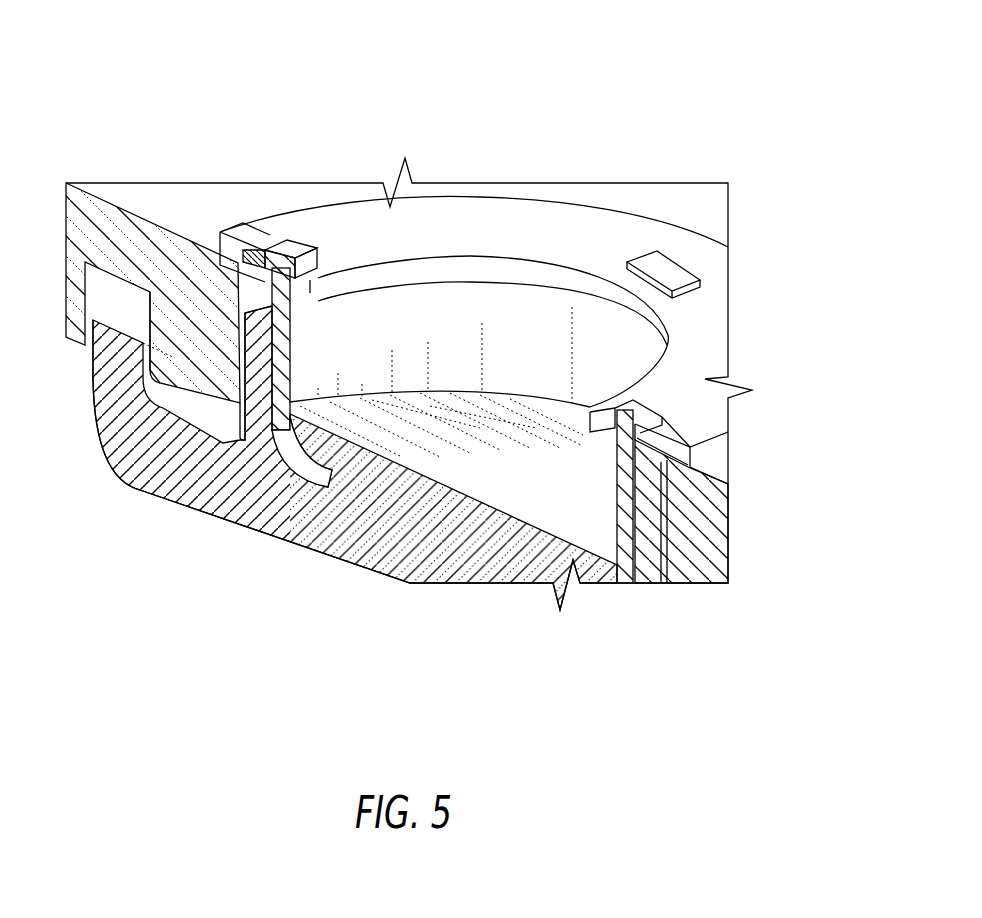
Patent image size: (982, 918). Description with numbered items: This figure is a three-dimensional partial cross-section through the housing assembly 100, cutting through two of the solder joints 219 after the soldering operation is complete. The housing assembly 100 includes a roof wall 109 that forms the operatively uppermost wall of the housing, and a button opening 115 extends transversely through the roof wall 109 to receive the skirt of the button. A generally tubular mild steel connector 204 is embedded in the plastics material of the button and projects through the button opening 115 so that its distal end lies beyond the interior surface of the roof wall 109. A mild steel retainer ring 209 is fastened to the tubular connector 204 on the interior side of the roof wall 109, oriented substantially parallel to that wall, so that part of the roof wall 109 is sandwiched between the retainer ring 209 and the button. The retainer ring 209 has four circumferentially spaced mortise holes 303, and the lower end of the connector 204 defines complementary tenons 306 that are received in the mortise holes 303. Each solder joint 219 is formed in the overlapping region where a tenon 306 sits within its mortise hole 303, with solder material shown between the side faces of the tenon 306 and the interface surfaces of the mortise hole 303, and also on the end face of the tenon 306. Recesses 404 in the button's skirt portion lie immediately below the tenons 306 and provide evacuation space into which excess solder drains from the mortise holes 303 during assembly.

The housing assembly 100 is at (866, 137).
The roof wall 109 is at (210, 372).
The button opening 115 is at (443, 538).
The tubular connector 204 is at (463, 319).
The retainer ring 209 is at (503, 237).
The solder joints 219 is at (673, 267).
The mortise holes 303 is at (240, 264).
The tenons 306 is at (292, 260).
The recesses 404 is at (226, 313).